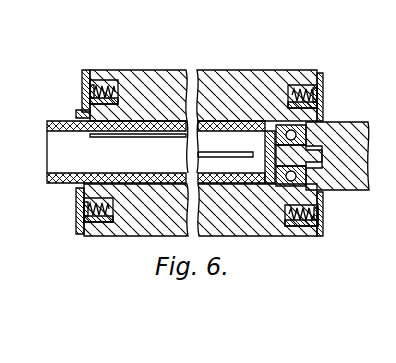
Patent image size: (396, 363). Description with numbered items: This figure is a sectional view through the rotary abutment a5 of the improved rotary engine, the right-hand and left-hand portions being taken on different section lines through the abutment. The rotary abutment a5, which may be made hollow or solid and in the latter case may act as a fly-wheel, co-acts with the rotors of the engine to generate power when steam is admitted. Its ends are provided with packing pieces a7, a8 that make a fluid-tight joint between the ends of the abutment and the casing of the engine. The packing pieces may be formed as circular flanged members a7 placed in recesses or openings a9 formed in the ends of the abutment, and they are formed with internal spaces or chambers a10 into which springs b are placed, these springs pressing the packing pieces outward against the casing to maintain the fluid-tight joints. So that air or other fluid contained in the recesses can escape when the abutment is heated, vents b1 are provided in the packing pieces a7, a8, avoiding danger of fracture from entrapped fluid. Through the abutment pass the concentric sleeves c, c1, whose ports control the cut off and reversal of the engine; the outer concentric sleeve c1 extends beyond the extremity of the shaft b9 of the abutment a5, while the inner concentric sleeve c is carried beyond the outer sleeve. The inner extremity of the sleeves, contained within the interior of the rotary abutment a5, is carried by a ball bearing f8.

The rotary abutment a5 is at (247, 87).
The packing piece a7 is at (324, 86).
The packing piece a8 is at (86, 72).
The recess a9 is at (318, 73).
The internal space a10 is at (97, 88).
The spring b is at (112, 87).
The vent b1 is at (90, 93).
The shaft b9 is at (78, 112).
The inner concentric sleeve c is at (45, 130).
The outer concentric sleeve c1 is at (45, 122).
The ball bearing f8 is at (321, 127).